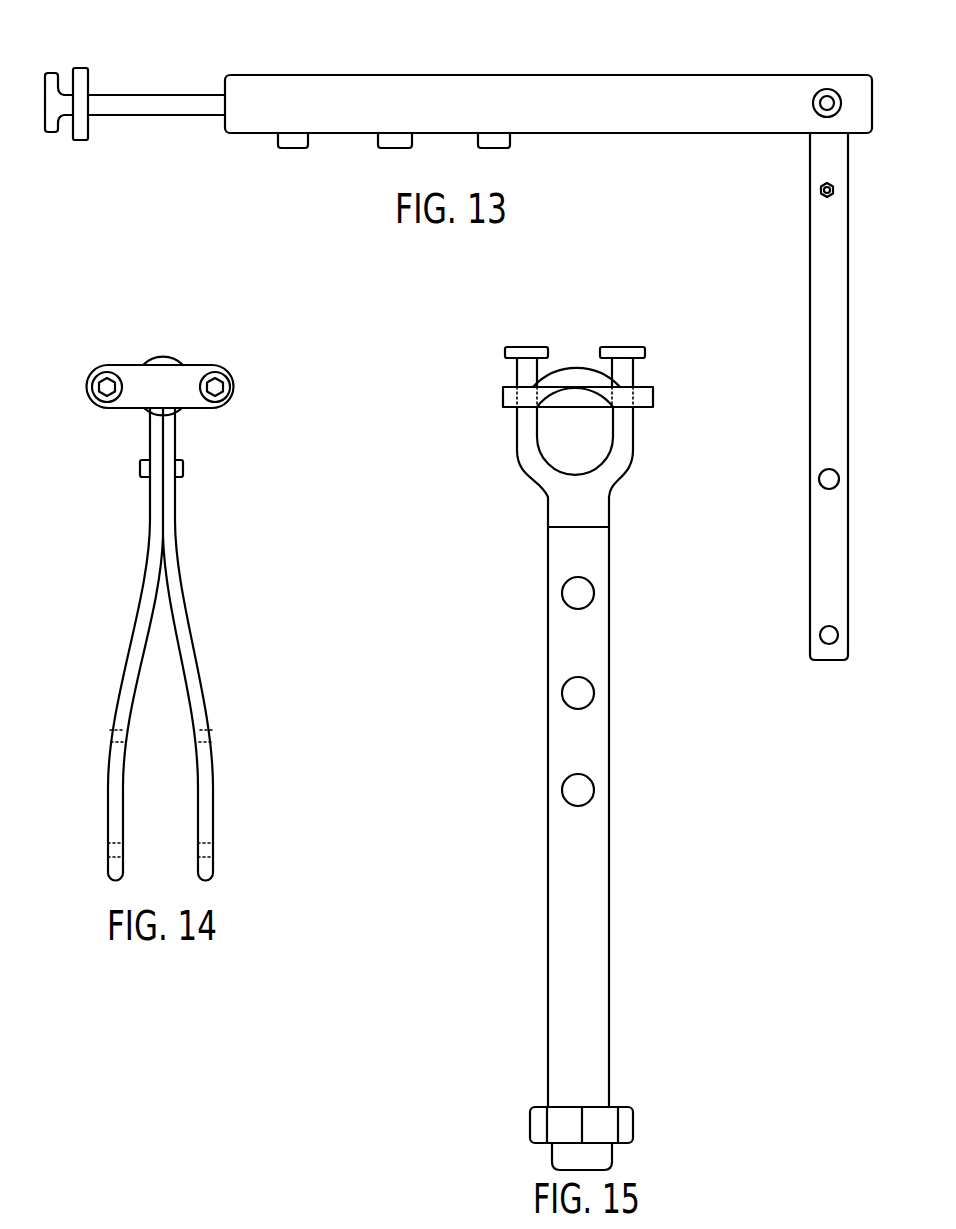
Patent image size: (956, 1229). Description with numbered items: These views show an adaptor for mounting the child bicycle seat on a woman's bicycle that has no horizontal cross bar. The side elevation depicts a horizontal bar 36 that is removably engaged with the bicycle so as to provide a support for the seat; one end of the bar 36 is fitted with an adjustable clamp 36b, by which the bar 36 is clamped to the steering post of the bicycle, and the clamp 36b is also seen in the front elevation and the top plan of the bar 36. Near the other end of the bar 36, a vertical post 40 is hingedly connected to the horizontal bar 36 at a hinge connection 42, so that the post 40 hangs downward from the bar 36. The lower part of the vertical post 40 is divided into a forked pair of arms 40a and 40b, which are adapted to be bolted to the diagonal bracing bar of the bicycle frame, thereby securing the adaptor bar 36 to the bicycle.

In FIG. 13, the bar 36 is at (524, 79).
In FIG. 15, the bar 36 is at (598, 822).
In FIG. 14, the adjustable clamp 36b is at (190, 372).
In FIG. 15, the adjustable clamp 36b is at (575, 367).
In FIG. 13, the vertical post 40 is at (818, 308).
In FIG. 14, the vertical post 40 is at (167, 644).
In FIG. 14, the forked arm 40a is at (108, 787).
In FIG. 14, the forked arm 40b is at (202, 762).
In FIG. 13, the hinge connection 42 is at (823, 90).